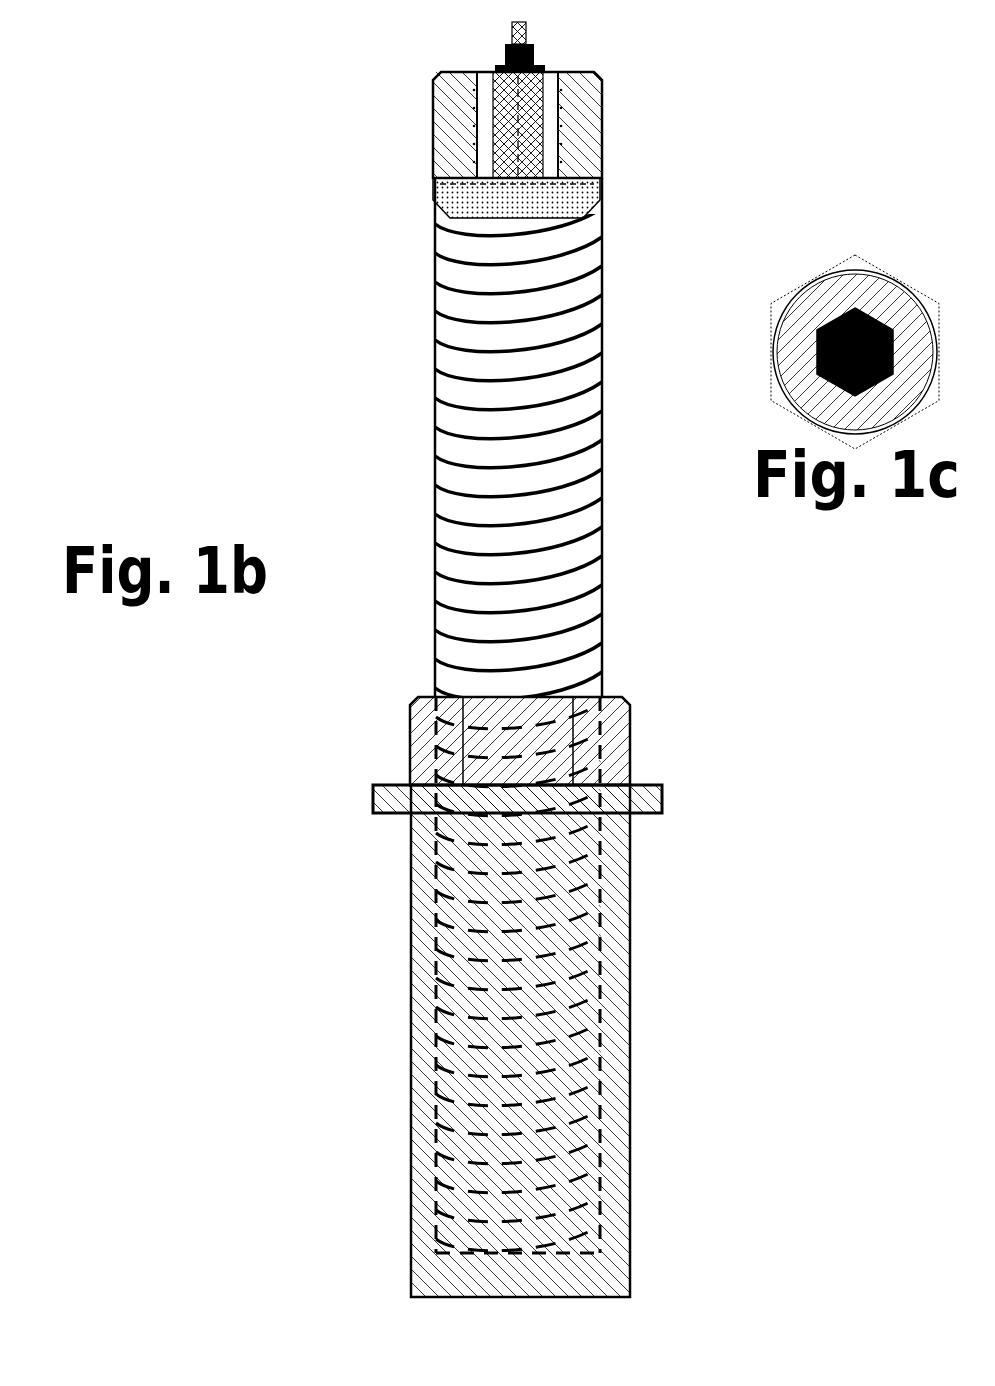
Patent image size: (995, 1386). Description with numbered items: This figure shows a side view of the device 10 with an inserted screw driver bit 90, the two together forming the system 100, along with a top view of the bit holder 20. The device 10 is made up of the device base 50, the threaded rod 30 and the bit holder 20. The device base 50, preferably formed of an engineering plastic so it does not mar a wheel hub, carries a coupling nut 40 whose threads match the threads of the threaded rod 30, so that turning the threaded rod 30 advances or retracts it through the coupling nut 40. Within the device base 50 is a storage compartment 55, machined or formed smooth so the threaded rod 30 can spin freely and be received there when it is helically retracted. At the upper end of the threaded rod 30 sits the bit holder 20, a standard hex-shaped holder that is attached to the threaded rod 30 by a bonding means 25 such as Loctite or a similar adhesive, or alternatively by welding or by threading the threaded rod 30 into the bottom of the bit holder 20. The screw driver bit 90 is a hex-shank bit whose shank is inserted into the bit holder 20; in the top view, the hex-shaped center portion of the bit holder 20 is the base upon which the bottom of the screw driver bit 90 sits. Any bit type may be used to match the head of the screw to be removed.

In FIG. 1B, the system 100 is at (117, 113).
In FIG. 1B, the device 10 is at (224, 265).
In FIG. 1B, the bit holder 20 is at (612, 158).
In FIG. 1C, the bit holder 20 is at (778, 296).
In FIG. 1B, the bonding means 25 is at (431, 188).
In FIG. 1B, the threaded rod 30 is at (433, 410).
In FIG. 1B, the coupling nut 40 is at (645, 814).
In FIG. 1B, the device base 50 is at (398, 1010).
In FIG. 1B, the storage compartment 55 is at (553, 1265).
In FIG. 1B, the screw driver bit 90 is at (548, 56).